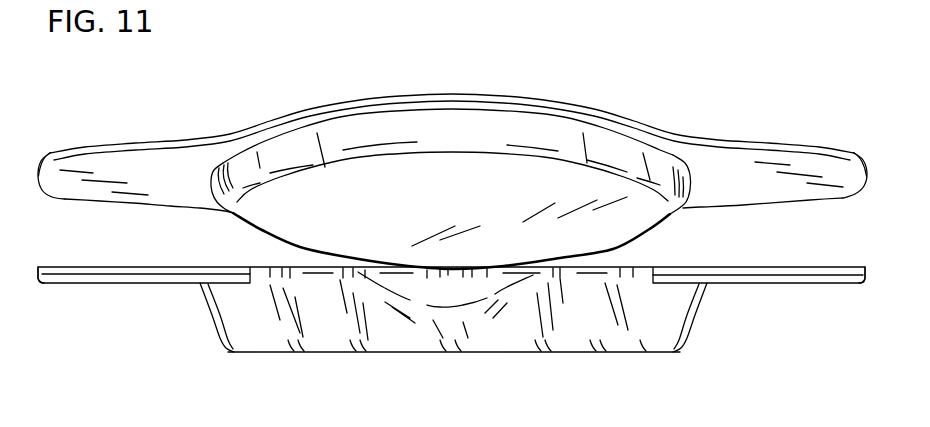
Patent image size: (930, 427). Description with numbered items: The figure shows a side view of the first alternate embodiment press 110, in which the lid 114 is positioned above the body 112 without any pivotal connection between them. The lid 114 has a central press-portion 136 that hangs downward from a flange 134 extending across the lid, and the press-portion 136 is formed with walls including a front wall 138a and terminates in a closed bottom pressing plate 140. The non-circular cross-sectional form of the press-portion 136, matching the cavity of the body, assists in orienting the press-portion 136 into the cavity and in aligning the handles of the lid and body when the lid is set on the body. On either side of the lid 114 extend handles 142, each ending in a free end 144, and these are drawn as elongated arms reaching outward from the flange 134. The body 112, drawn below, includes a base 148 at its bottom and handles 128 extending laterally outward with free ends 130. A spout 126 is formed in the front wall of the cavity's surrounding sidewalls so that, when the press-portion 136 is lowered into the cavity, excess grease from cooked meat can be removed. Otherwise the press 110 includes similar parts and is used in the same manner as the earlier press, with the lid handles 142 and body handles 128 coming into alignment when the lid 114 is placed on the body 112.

The press 110 is at (248, 358).
The body 112 is at (612, 338).
The lid 114 is at (470, 92).
The spout 126 is at (452, 270).
The handles 128 is at (153, 284).
The free ends 130 is at (43, 285).
The flange 134 is at (323, 108).
The press-portion 136 is at (538, 130).
The front wall 138a is at (465, 133).
The pressing plate 140 is at (533, 205).
The handles 142 is at (176, 141).
The free ends 144 is at (52, 150).
The base 148 is at (502, 353).